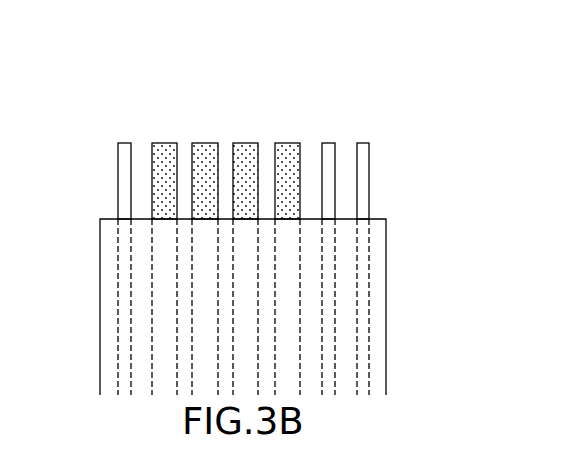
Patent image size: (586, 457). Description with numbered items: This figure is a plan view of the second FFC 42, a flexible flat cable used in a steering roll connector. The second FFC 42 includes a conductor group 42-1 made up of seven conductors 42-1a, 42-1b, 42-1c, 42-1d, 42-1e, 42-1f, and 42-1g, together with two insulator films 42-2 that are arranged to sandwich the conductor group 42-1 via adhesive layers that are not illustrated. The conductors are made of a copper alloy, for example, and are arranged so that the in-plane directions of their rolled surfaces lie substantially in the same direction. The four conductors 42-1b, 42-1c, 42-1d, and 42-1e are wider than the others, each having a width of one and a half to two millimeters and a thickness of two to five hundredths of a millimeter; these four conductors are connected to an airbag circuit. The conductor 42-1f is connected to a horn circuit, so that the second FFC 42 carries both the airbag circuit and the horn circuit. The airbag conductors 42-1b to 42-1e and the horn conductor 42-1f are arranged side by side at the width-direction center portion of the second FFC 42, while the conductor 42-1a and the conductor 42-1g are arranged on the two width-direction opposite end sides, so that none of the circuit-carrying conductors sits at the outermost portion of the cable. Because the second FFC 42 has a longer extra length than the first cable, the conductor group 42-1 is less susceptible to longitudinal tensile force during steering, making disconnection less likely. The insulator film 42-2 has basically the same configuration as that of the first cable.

The second FFC 42 is at (273, 200).
The conductor group 42-1 is at (449, 56).
The conductor 42-1a is at (123, 143).
The conductor 42-1b is at (162, 143).
The conductor 42-1c is at (205, 143).
The conductor 42-1d is at (247, 143).
The conductor 42-1e is at (290, 143).
The conductor 42-1f is at (328, 143).
The conductor 42-1g is at (363, 143).
The insulator film 42-2 is at (382, 322).